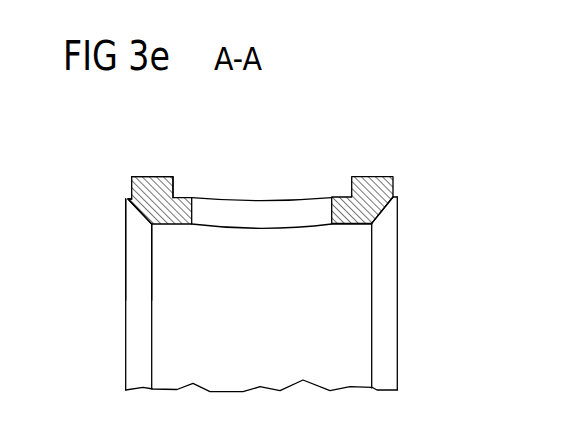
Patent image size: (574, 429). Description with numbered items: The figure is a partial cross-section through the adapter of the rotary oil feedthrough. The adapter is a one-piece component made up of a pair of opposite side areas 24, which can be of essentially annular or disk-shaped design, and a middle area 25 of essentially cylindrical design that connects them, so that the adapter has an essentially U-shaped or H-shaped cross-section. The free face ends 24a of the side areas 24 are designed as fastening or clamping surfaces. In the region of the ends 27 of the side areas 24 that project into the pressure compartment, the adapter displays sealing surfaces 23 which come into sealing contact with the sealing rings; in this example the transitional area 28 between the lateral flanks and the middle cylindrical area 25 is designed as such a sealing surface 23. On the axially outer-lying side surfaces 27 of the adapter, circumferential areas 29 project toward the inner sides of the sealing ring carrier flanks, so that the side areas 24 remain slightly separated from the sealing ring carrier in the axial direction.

The sealing surface 23 is at (400, 208).
The side area 24 is at (270, 212).
The free face end 24a is at (157, 176).
The middle area 25 is at (348, 225).
The end of side area 27 is at (128, 191).
The transitional area 28 is at (125, 218).
The projecting circumferential area 29 is at (125, 200).